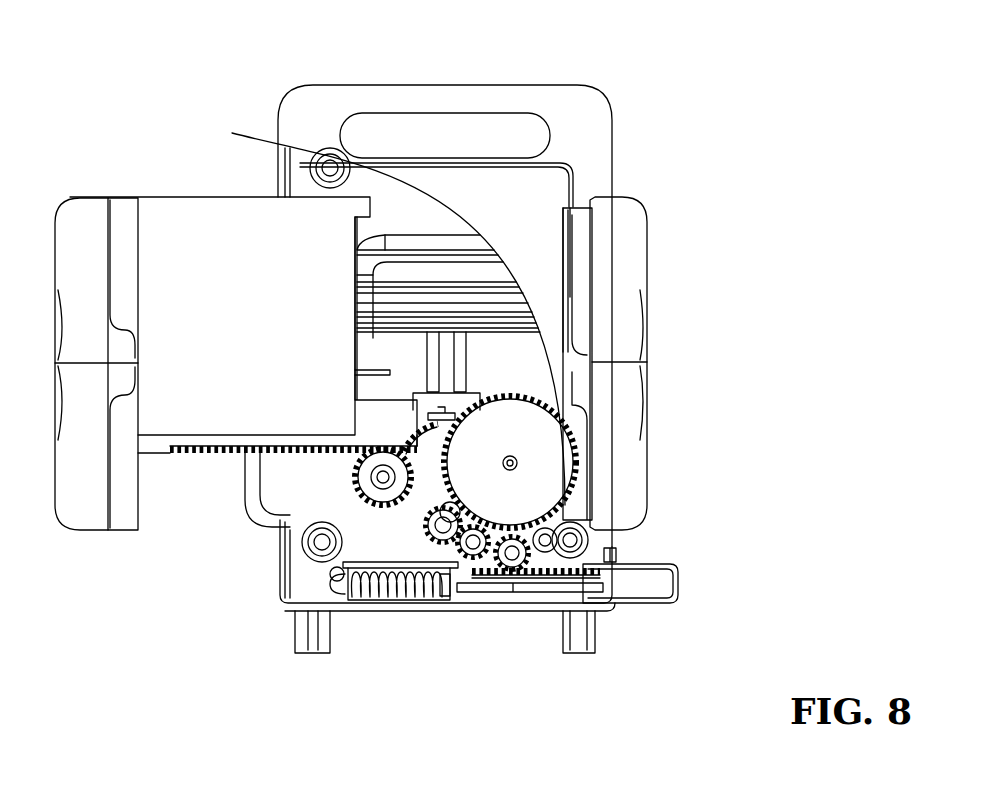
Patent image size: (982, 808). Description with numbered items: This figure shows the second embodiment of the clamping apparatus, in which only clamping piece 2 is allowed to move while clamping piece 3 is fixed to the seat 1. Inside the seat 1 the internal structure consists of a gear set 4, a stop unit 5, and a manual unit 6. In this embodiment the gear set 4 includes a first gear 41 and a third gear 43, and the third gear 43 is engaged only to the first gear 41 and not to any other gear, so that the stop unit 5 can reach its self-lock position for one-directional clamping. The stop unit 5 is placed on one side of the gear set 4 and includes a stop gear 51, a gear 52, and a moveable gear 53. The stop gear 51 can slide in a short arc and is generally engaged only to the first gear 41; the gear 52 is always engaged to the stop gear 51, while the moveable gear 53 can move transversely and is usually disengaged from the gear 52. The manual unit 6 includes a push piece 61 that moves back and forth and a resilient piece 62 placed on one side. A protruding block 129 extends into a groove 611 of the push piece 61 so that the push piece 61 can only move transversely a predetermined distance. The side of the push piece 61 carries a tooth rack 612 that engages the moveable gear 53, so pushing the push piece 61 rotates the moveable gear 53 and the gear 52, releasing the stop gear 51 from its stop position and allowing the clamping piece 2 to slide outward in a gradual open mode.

The seat 1 is at (575, 96).
The clamping piece 2 is at (209, 205).
The clamping piece 3 is at (628, 232).
The gear set 4 is at (175, 535).
The first gear 41 is at (340, 485).
The third gear 43 is at (458, 487).
The stop unit 5 is at (742, 455).
The stop gear 51 is at (450, 512).
The gear 52 is at (487, 535).
The moveable gear 53 is at (610, 547).
The manual unit 6 is at (447, 715).
The push piece 61 is at (440, 601).
The resilient piece 62 is at (393, 612).
The protruding block 129 is at (473, 601).
The tooth rack 612 is at (548, 601).
The groove 611 is at (573, 614).